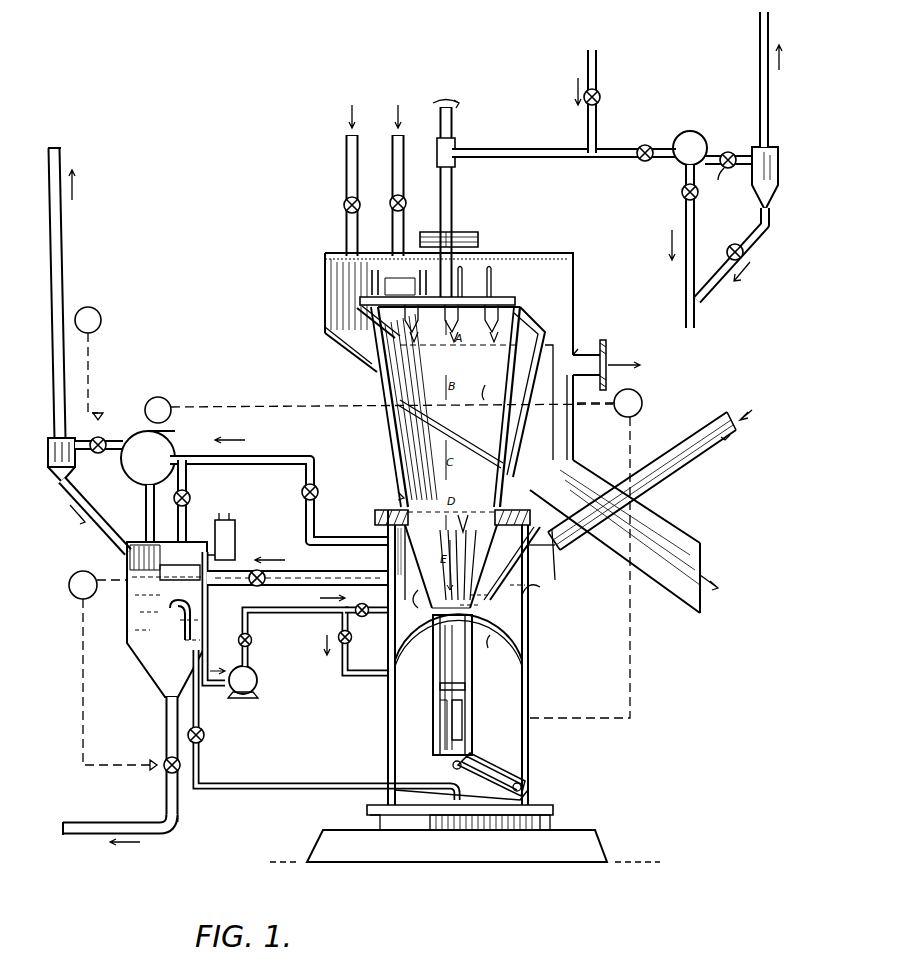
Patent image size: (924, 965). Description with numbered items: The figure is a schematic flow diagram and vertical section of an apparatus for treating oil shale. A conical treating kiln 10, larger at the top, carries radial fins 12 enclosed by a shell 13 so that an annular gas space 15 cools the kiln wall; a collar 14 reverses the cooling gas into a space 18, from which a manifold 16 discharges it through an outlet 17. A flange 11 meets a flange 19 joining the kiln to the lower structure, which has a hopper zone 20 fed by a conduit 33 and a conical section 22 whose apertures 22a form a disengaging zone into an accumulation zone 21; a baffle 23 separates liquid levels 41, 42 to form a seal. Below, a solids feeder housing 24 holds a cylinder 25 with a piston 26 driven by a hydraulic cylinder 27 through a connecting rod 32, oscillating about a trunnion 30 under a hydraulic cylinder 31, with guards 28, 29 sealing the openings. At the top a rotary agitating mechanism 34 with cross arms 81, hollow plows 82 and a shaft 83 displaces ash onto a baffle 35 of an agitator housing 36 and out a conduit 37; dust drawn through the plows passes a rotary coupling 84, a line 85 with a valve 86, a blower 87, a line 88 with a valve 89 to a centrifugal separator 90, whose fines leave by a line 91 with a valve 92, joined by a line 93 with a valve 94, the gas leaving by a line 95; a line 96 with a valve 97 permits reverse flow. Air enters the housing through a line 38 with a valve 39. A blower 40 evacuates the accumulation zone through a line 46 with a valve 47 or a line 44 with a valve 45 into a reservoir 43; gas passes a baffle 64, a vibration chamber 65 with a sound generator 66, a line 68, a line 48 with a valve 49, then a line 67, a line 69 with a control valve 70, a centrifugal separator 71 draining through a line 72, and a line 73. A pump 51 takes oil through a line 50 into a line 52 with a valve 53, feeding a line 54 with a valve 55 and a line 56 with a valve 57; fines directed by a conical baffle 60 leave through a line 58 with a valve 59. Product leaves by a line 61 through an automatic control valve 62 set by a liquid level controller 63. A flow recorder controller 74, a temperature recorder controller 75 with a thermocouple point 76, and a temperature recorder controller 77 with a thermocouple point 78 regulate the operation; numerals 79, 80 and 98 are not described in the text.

The conical treating kiln 10 is at (385, 440).
The flange 11 is at (375, 515).
The radial fins 12 is at (392, 494).
The shell 13 is at (375, 420).
The collar 14 is at (538, 325).
The annular gas space 15 is at (536, 345).
The manifold 16 is at (553, 435).
The outlet 17 is at (604, 345).
The space 18 is at (578, 349).
The flange 19 is at (548, 540).
The hopper zone 20 is at (560, 565).
The accumulation zone 21 is at (385, 560).
The conical section 22 is at (510, 548).
The apertures 22a is at (474, 513).
The baffle 23 is at (540, 565).
The solids feeder housing 24 is at (530, 712).
The cylinder 25 is at (472, 672).
The piston 26 is at (440, 668).
The hydraulic cylinder 27 is at (462, 710).
The guard 28 is at (420, 640).
The guard 29 is at (499, 647).
The trunnion 30 is at (440, 712).
The hydraulic cylinder 31 is at (495, 765).
The connecting rod 32 is at (465, 686).
The conduit 33 is at (685, 462).
The rotary agitating mechanism 34 is at (492, 278).
The baffle 35 is at (337, 352).
The agitator housing 36 is at (325, 256).
The conduit 37 is at (685, 530).
The line 38 is at (345, 168).
The valve 39 is at (344, 208).
The blower 40 is at (158, 440).
The liquid level 41 is at (412, 599).
The liquid level 42 is at (555, 590).
The reservoir 43 is at (150, 652).
The line 44 is at (280, 592).
The valve 45 is at (252, 590).
The line 46 is at (308, 455).
The valve 47 is at (318, 488).
The line 48 is at (186, 520).
The valve 49 is at (190, 494).
The line 50 is at (209, 655).
The pump 51 is at (257, 682).
The line 52 is at (250, 626).
The valve 53 is at (252, 644).
The line 54 is at (345, 620).
The valve 55 is at (352, 640).
The line 56 is at (315, 644).
The valve 57 is at (350, 673).
The line 58 is at (268, 778).
The valve 59 is at (204, 732).
The conical baffle 60 is at (420, 800).
The line 61 is at (140, 805).
The automatic control valve 62 is at (165, 772).
The liquid level controller 63 is at (78, 599).
The baffle 64 is at (168, 600).
The vibration chamber 65 is at (127, 560).
The sound generator 66 is at (235, 535).
The line 67 is at (145, 520).
The line 68 is at (175, 562).
The line 69 is at (106, 438).
The control valve 70 is at (103, 408).
The centrifugal separator 71 is at (70, 462).
The line 72 is at (80, 498).
The line 73 is at (62, 278).
The flow recorder controller 74 is at (101, 318).
The temperature recorder controller 75 is at (642, 398).
The thermocouple point 76 is at (480, 384).
The temperature recorder controller 77 is at (168, 400).
The thermocouple point 78 is at (410, 395).
The inlet pipe 79 is at (392, 222).
The valve 80 is at (390, 200).
The cross arms 81 is at (510, 300).
The plows 82 is at (362, 320).
The shaft 83 is at (476, 246).
The rotary coupling 84 is at (455, 140).
The line 85 is at (545, 150).
The valve 86 is at (651, 147).
The blower 87 is at (695, 137).
The line 88 is at (728, 181).
The valve 89 is at (732, 152).
The centrifugal separator 90 is at (778, 160).
The line 91 is at (752, 245).
The valve 92 is at (727, 250).
The line 93 is at (685, 180).
The valve 94 is at (682, 196).
The line 95 is at (769, 98).
The line 96 is at (587, 54).
The valve 97 is at (600, 97).
The packing gland 98 is at (478, 235).